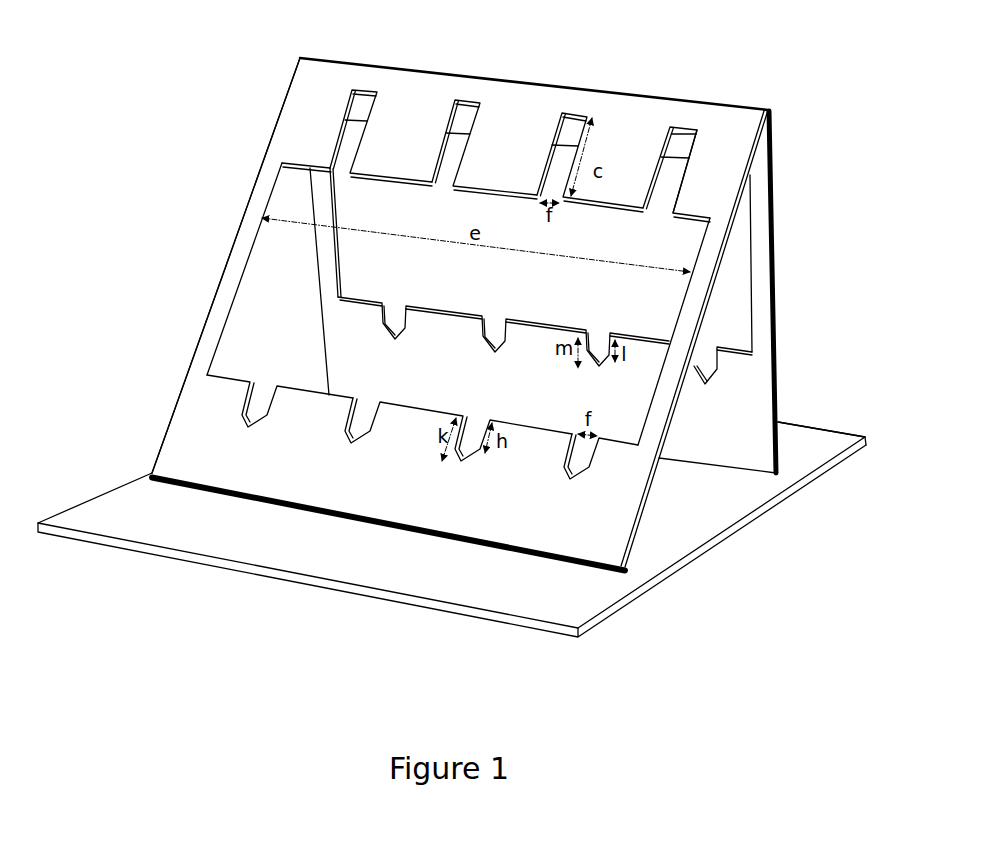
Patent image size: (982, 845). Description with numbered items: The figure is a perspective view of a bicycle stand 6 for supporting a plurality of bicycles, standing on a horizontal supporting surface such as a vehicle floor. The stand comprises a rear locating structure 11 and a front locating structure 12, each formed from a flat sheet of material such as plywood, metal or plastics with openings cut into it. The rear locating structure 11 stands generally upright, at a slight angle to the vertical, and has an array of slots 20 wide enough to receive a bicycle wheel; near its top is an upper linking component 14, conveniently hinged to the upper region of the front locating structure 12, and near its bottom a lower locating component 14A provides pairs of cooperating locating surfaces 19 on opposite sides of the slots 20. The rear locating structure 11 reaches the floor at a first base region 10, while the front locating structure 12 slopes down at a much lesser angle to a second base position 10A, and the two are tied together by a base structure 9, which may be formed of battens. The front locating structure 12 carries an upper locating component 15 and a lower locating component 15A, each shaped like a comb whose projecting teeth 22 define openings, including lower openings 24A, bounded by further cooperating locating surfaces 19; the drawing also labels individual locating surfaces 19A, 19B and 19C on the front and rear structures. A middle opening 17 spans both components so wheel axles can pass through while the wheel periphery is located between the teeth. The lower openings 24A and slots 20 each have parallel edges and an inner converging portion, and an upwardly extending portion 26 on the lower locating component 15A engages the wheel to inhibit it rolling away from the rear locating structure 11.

The bicycle stand 6 is at (408, 68).
The base structure 9 is at (707, 510).
The first base region 10 is at (780, 422).
The second base position 10A is at (641, 526).
The rear locating structure 11 is at (778, 287).
The front locating structure 12 is at (265, 221).
The upper linking component 14 is at (365, 97).
The lower locating component 14A is at (753, 455).
The upper locating component 15 is at (276, 122).
The lower locating component 15A is at (210, 402).
The middle opening 17 is at (273, 279).
The cooperating locating surfaces 19 is at (443, 147).
The lower slot 19A is at (588, 472).
The end notch 19B is at (718, 372).
The end slot wall 19C is at (692, 155).
The slots 20 is at (393, 313).
The projecting teeth 22 is at (302, 389).
The lower openings 24A is at (265, 402).
The upwardly extending portion 26 is at (368, 488).